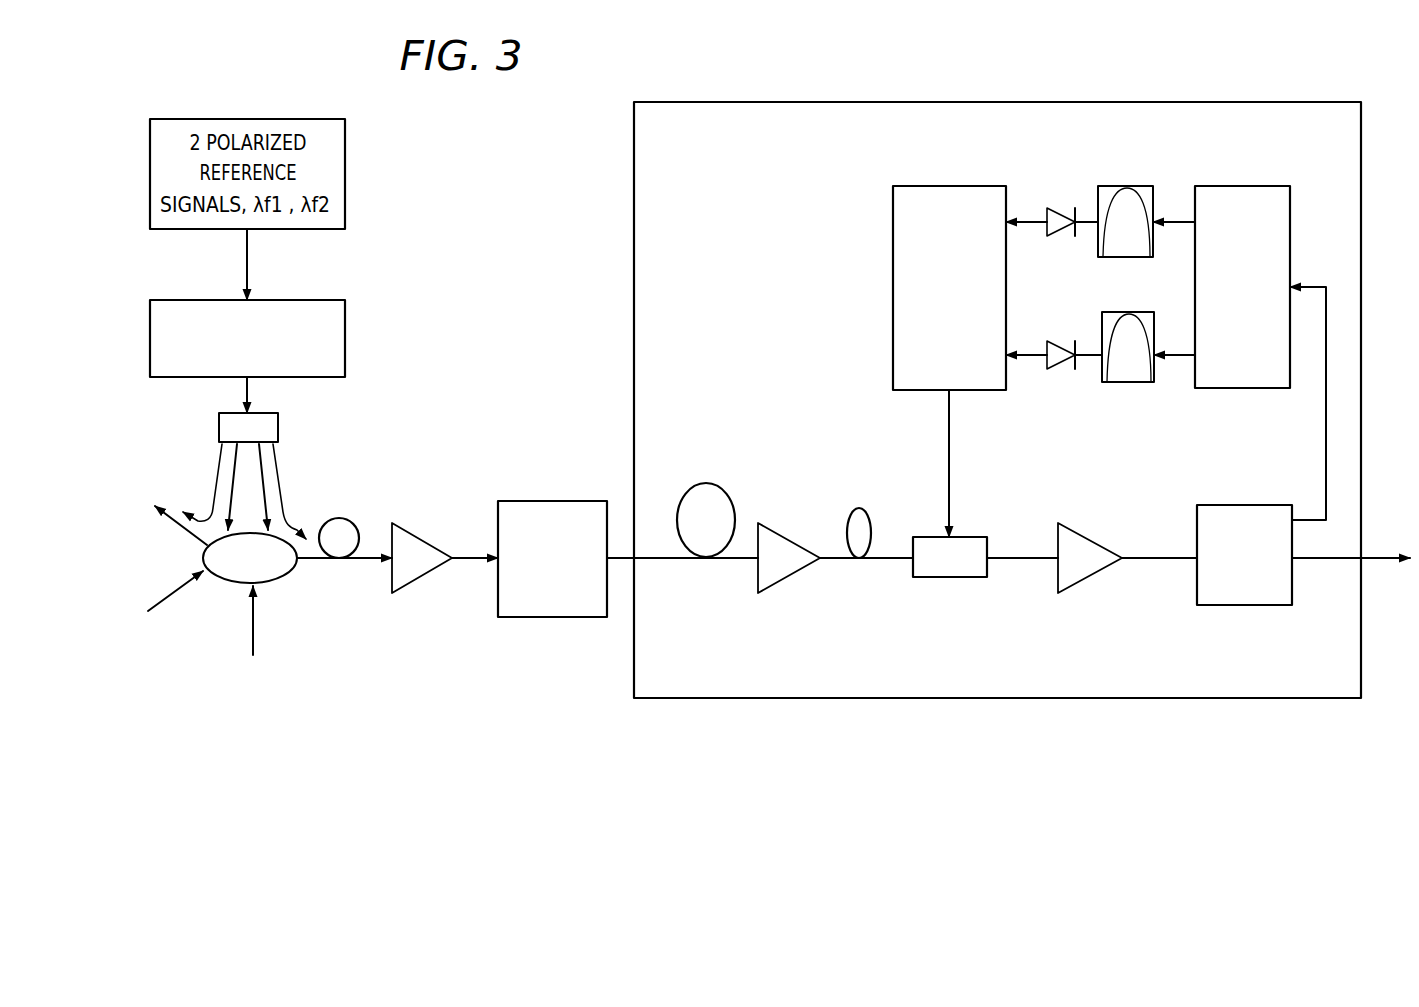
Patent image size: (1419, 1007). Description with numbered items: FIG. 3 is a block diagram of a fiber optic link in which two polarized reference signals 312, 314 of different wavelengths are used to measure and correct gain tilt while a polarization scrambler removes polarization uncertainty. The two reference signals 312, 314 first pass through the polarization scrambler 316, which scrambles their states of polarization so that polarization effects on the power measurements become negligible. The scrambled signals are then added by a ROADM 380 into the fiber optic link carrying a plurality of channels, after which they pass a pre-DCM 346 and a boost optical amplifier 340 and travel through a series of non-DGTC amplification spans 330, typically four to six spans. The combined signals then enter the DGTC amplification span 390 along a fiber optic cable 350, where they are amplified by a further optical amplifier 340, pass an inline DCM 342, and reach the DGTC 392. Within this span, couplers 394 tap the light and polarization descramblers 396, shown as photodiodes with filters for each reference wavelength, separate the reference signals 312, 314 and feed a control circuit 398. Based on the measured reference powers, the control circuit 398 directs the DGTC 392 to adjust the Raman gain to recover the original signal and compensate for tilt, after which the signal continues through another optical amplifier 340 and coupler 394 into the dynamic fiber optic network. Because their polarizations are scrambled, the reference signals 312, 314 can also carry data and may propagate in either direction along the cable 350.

The reference signal 312 is at (254, 229).
The reference signal 314 is at (305, 229).
The polarization scrambler 316 is at (345, 340).
The non-DGTC amplification spans 330 is at (552, 501).
The optical amplifier 340 is at (408, 526).
The inline DCM 342 is at (859, 508).
The pre-DCM 346 is at (339, 518).
The fiber optic cable 350 is at (706, 483).
The ROADM 380 is at (228, 583).
The DGTC amplification span 390 is at (983, 698).
The DGTC 392 is at (945, 577).
The coupler 394 is at (1242, 605).
The polarization descrambler 396 is at (1050, 210).
The control circuit 398 is at (945, 186).